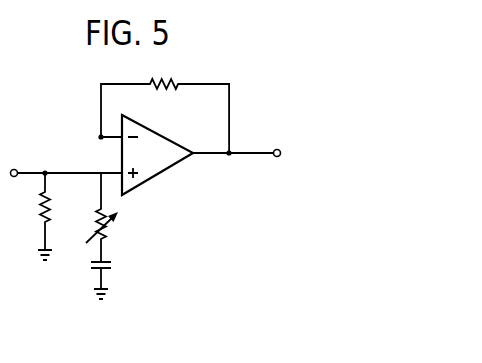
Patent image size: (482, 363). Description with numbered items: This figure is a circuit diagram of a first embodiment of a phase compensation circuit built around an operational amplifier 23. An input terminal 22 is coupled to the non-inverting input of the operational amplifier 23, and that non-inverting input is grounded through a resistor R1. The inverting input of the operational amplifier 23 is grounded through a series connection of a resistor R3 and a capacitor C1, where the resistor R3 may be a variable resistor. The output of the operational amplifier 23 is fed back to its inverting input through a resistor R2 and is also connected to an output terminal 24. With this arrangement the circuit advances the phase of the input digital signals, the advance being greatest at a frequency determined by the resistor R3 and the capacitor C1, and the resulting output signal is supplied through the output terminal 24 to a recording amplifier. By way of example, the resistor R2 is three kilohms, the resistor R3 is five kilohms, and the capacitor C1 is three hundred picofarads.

The input terminal 22 is at (15, 169).
The operational amplifier 23 is at (155, 180).
The output terminal 24 is at (277, 149).
The resistor R1 is at (55, 216).
The resistor R2 is at (165, 104).
The variable resistor R3 is at (110, 217).
The capacitor C1 is at (113, 276).